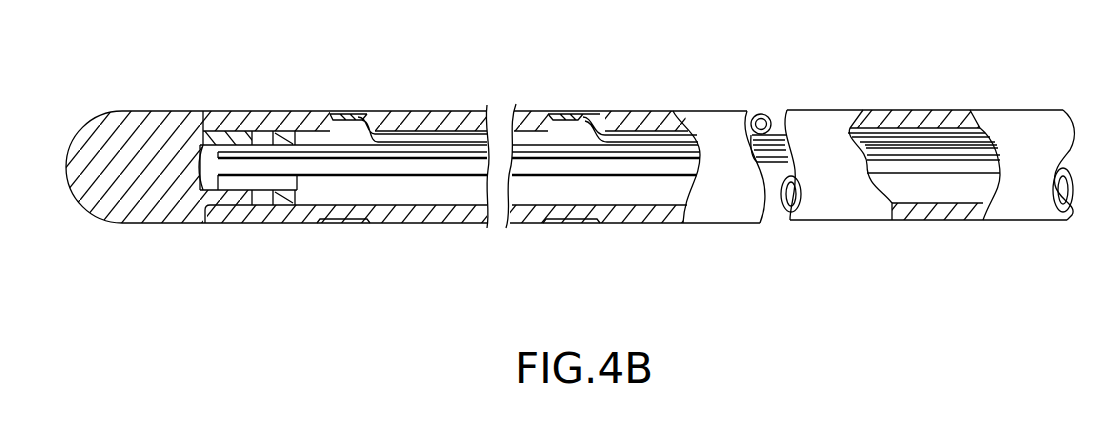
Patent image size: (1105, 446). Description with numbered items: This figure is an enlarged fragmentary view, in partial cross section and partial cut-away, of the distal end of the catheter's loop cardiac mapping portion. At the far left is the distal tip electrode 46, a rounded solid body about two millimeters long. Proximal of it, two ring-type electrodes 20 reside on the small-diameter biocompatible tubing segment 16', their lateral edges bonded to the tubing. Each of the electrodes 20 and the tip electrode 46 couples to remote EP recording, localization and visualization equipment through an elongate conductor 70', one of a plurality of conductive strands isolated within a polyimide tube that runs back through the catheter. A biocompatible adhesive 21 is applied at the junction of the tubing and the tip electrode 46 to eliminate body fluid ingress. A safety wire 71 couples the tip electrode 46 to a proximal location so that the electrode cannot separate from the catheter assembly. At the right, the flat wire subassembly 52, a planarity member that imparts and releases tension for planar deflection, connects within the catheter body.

The distal tip electrode 46 is at (81, 114).
The elongate conductor 70' is at (508, 84).
The ring-type electrode 20 is at (357, 104).
The segment of the loop cardiac mapping portion 16' is at (773, 106).
The flat wire subassembly 52 is at (931, 102).
The safety wire 71 is at (436, 188).
The biocompatible adhesive 21 is at (204, 238).